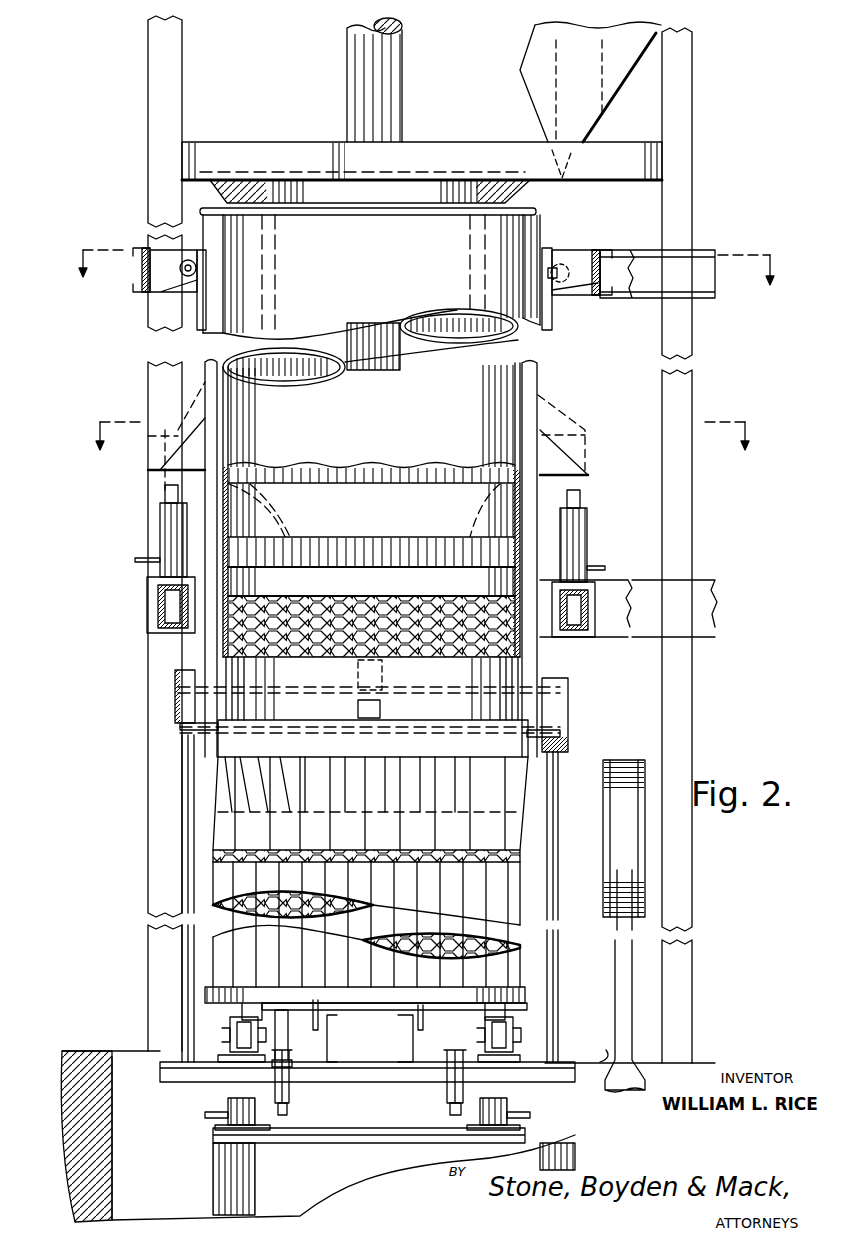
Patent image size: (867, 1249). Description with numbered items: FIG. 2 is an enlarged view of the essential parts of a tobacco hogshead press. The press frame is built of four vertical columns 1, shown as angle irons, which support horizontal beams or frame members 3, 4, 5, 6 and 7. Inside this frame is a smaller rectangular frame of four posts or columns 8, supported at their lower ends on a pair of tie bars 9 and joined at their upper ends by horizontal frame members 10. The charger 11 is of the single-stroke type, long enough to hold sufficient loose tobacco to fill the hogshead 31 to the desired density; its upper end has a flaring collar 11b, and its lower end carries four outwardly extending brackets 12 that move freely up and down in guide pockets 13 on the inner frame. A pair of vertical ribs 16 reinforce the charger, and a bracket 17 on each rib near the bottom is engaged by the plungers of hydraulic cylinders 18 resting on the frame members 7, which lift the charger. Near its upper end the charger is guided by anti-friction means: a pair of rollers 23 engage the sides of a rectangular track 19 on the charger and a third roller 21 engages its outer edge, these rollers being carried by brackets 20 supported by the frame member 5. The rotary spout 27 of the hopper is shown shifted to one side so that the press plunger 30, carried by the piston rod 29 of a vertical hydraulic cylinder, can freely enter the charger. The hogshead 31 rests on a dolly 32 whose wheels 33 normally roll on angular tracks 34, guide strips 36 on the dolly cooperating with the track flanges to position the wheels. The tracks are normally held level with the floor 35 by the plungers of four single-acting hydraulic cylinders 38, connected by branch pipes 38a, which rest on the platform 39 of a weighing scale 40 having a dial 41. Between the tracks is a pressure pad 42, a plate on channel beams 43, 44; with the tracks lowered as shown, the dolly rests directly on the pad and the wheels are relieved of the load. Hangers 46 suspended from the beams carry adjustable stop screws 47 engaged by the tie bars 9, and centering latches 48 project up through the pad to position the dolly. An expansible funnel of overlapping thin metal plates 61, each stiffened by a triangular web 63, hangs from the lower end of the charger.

The vertical columns 1 is at (158, 790).
The horizontal beam 3 is at (610, 182).
The horizontal beam 4 is at (648, 288).
The horizontal frame member 5 is at (135, 272).
The horizontal beam 6 is at (637, 598).
The horizontal frame member 7 is at (188, 606).
The posts or columns 8 is at (183, 845).
The tie bars 9 is at (175, 1077).
The horizontal frame members 10 is at (330, 738).
The charger 11 is at (522, 368).
The flaring collar 11b is at (530, 186).
The brackets 12 is at (192, 722).
The guide pockets 13 is at (177, 690).
The ribs 16 is at (208, 330).
The bracket 17 is at (160, 462).
The hydraulic cylinders 18 is at (163, 527).
The rectangular track 19 is at (195, 318).
The bracket 20 is at (166, 263).
The third roller 21 is at (190, 258).
The rollers 23 is at (555, 266).
The rotary spout 27 is at (596, 115).
The piston rod 29 is at (388, 108).
The press plunger 30 is at (355, 497).
The hogshead 31 is at (325, 938).
The dolly 32 is at (528, 1003).
The wheels 33 is at (230, 1030).
The tracks 34 is at (232, 1060).
The floor 35 is at (593, 1045).
The guide strips 36 is at (262, 1005).
The hydraulic cylinders 38 is at (519, 1105).
The branch pipes 38a is at (207, 1116).
The platform 39 is at (363, 1136).
The weighing scale 40 is at (215, 1165).
The dial 41 is at (624, 766).
The pressure pad 42 is at (388, 1010).
The channel beam 43 is at (332, 1044).
The channel beam 44 is at (290, 1030).
The hangers 46 is at (290, 1095).
The stop screws 47 is at (289, 1112).
The centering latches 48 is at (320, 1005).
The metal plates 61 is at (410, 785).
The triangular web 63 is at (310, 795).